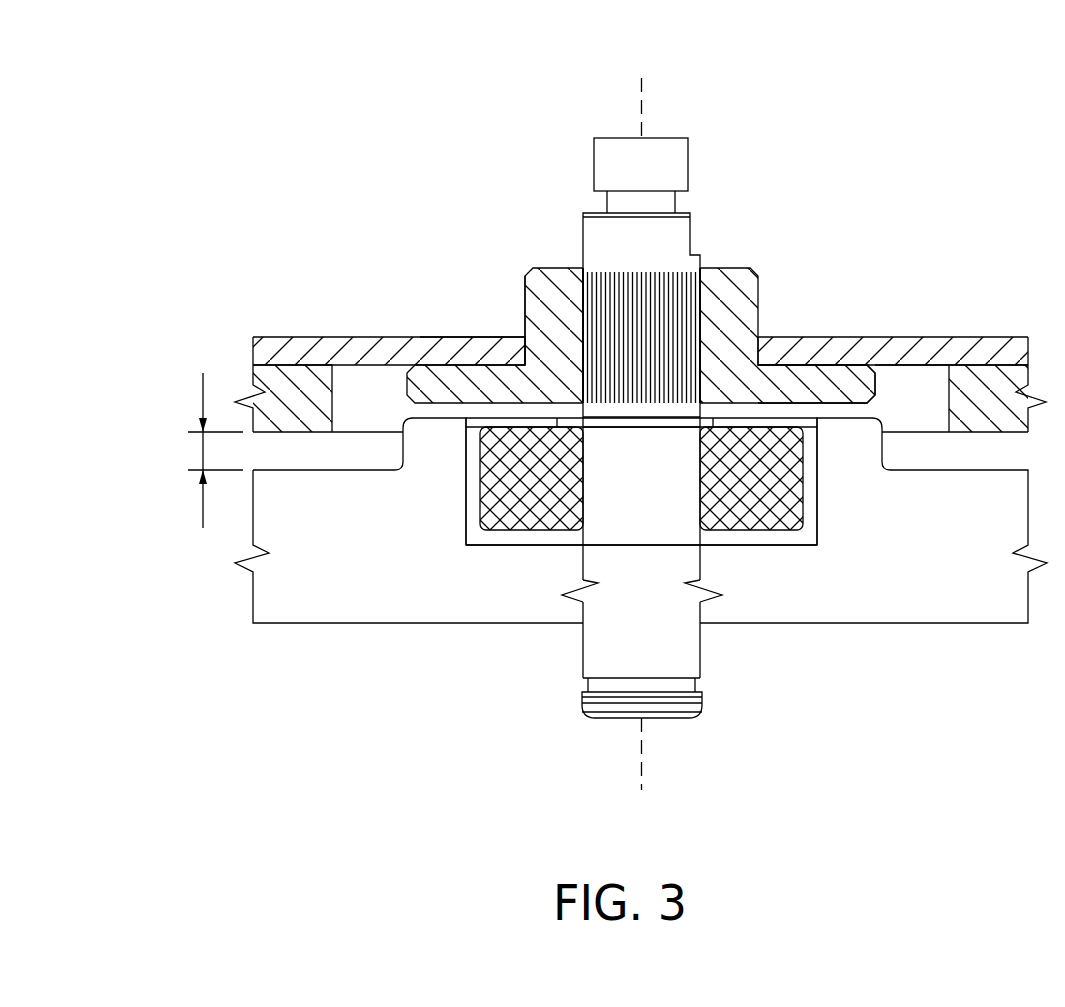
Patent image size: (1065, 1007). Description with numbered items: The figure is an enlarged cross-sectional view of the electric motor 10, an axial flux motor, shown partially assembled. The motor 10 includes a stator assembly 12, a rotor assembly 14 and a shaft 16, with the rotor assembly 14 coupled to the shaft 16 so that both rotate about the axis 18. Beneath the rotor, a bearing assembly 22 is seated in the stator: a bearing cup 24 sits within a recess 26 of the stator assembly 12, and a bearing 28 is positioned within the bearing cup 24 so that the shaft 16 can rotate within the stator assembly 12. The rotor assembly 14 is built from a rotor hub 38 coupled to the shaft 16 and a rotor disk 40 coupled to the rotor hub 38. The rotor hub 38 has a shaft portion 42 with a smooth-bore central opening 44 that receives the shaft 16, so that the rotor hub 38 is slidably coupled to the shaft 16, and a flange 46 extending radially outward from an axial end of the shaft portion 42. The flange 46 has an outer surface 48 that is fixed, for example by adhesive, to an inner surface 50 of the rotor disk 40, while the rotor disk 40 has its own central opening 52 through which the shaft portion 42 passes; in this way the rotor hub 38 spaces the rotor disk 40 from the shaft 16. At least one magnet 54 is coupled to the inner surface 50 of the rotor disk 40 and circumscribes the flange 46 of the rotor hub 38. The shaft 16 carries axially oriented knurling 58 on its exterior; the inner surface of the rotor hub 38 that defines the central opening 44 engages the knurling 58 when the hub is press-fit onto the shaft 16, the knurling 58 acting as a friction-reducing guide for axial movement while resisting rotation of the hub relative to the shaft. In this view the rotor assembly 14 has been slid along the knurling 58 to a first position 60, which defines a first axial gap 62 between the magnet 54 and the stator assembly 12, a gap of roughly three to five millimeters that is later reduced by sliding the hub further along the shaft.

The electric motor 10 is at (217, 203).
The stator assembly 12 is at (357, 542).
The rotor assembly 14 is at (459, 260).
The shaft 16 is at (660, 238).
The axis 18 is at (643, 108).
The bearing assembly 22 is at (472, 562).
The bearing cup 24 is at (547, 540).
The recess 26 is at (462, 513).
The bearing 28 is at (760, 518).
The rotor hub 38 is at (748, 280).
The rotor disk 40 is at (332, 347).
The shaft portion 42 is at (737, 317).
The central opening 44 is at (580, 313).
The flange 46 is at (798, 383).
The outer surface 48 is at (862, 363).
The inner surface 50 is at (902, 367).
The central opening 52 is at (513, 347).
The magnet 54 is at (987, 387).
The knurling 58 is at (677, 293).
The first position 60 is at (542, 245).
The first axial gap 62 is at (202, 450).